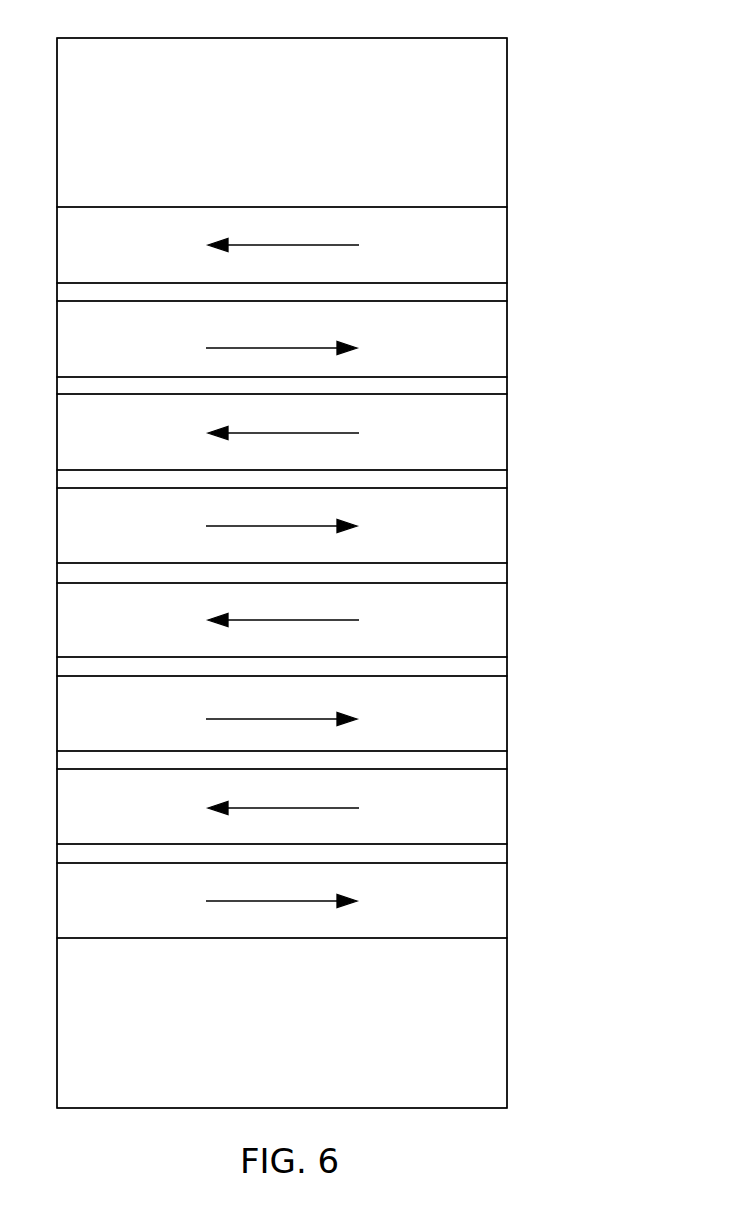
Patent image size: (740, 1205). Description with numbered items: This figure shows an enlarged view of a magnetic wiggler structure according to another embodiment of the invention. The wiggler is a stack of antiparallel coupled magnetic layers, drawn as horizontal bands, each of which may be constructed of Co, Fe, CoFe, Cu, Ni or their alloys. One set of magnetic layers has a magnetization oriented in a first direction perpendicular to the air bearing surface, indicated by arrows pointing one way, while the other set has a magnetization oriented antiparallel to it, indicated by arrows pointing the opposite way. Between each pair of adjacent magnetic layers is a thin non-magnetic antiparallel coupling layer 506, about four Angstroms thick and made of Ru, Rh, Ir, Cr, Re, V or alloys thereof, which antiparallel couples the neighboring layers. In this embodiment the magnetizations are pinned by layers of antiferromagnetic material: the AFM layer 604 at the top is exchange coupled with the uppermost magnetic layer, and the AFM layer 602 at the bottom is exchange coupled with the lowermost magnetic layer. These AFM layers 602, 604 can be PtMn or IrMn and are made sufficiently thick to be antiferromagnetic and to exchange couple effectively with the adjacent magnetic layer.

The antiferromagnetic material layer 604 is at (320, 124).
The antiferromagnetic material layer 602 is at (340, 1013).
The non-magnetic antiparallel coupling layer 506 is at (500, 292).